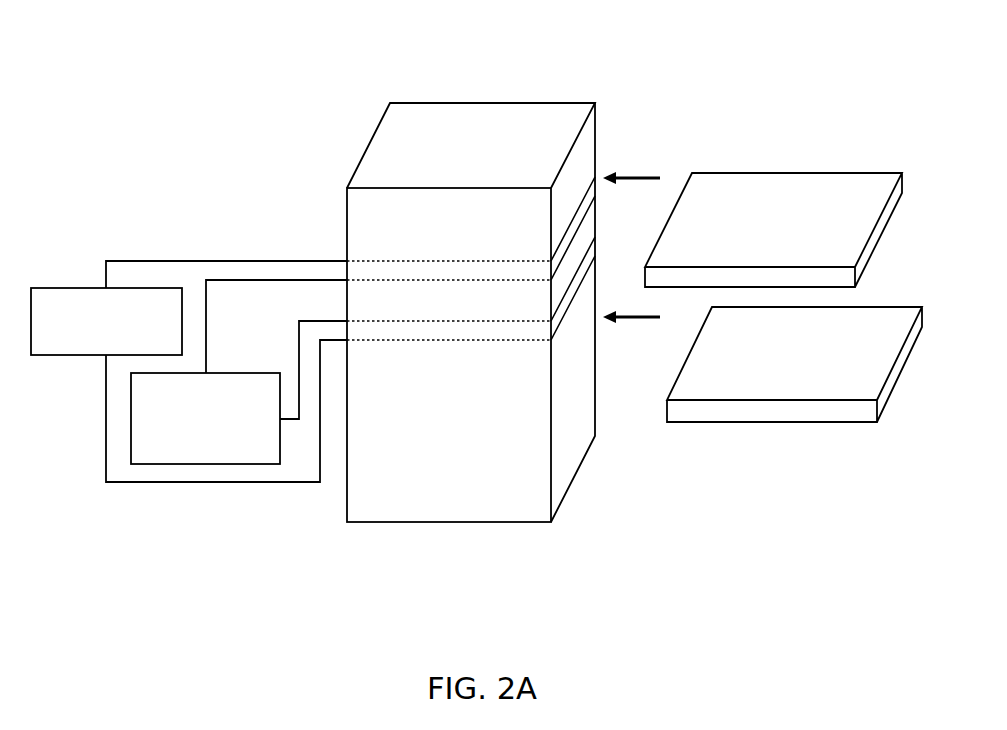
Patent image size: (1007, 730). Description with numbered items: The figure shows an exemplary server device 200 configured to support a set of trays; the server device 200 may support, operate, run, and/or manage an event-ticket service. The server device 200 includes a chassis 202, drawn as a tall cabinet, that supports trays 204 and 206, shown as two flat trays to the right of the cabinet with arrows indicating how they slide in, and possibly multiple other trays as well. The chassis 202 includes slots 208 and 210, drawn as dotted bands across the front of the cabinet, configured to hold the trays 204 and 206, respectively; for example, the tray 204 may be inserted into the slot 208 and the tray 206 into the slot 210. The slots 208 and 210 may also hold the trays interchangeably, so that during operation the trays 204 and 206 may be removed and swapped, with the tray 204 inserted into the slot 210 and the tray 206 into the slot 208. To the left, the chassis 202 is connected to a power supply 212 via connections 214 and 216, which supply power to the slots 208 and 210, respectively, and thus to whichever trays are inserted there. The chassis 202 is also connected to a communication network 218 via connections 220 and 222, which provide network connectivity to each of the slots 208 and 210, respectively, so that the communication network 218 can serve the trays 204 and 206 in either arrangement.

The server device 200 is at (142, 37).
The chassis 202 is at (452, 102).
The tray 204 is at (858, 173).
The tray 206 is at (879, 304).
The slot 208 is at (449, 271).
The slot 210 is at (449, 331).
The power supply 212 is at (106, 321).
The connection 214 is at (177, 259).
The connection 216 is at (185, 483).
The communication network 218 is at (205, 418).
The connection 220 is at (207, 346).
The connection 222 is at (328, 320).